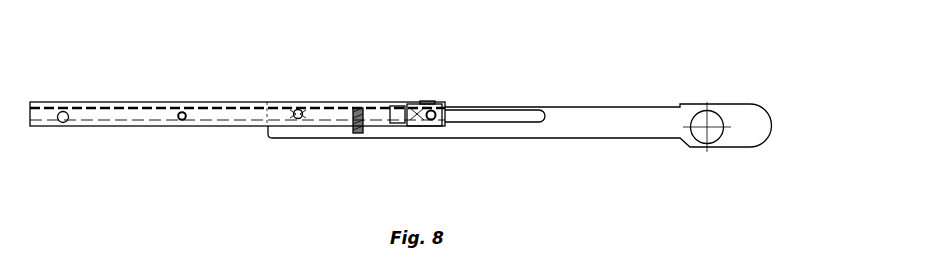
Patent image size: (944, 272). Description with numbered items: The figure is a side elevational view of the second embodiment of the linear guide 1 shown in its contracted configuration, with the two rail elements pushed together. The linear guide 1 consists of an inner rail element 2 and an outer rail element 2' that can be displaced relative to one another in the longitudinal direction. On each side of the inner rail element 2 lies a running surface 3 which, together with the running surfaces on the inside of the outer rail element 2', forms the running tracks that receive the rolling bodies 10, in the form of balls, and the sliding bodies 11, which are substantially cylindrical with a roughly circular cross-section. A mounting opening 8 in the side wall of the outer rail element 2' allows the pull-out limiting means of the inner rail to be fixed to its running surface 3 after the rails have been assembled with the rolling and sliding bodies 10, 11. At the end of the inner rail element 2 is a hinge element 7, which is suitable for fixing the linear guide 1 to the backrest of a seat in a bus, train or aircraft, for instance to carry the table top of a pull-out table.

The linear guide 1 is at (204, 82).
The inner rail element 2 is at (520, 95).
The outer rail element 2' is at (237, 110).
The running surface 3 is at (495, 120).
The hinge element 7 is at (708, 118).
The mounting opening 8 is at (64, 111).
The rolling bodies 10 is at (405, 113).
The sliding bodies 11 is at (393, 122).